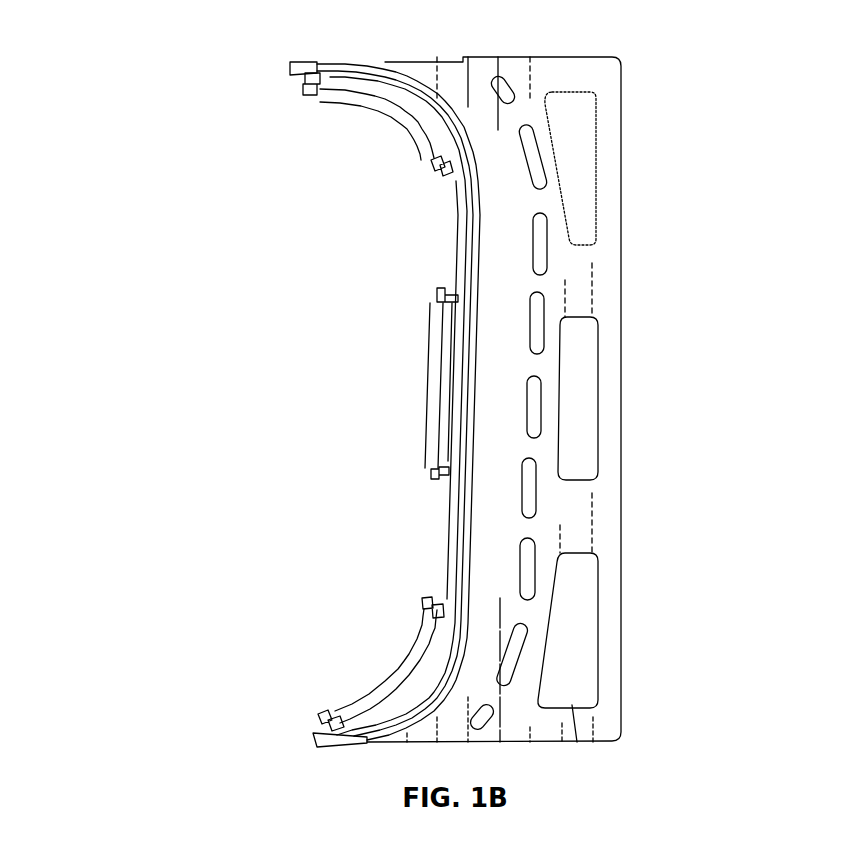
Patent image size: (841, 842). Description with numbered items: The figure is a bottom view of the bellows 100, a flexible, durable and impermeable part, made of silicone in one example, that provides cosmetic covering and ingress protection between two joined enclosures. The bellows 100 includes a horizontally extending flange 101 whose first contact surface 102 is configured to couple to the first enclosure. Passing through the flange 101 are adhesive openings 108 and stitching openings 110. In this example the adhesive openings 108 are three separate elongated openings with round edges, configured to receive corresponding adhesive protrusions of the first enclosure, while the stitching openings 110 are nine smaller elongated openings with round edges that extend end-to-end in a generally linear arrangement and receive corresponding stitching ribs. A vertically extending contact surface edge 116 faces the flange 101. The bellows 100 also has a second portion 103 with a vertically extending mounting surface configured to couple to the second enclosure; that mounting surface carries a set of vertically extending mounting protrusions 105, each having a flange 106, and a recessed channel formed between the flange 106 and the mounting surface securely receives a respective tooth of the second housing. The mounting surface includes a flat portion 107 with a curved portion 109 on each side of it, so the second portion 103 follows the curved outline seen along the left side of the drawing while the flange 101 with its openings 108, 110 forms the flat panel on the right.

The bellows 100 is at (165, 50).
The flange 101 is at (640, 482).
The first contact surface 102 is at (594, 273).
The second portion 103 is at (441, 329).
The mounting protrusions 105 is at (447, 171).
The flange 106 is at (344, 101).
The flat portion 107 is at (456, 283).
The adhesive openings 108 is at (577, 121).
The curved portion 109 is at (300, 72).
The stitching openings 110 is at (487, 717).
The contact surface edge 116 is at (482, 195).